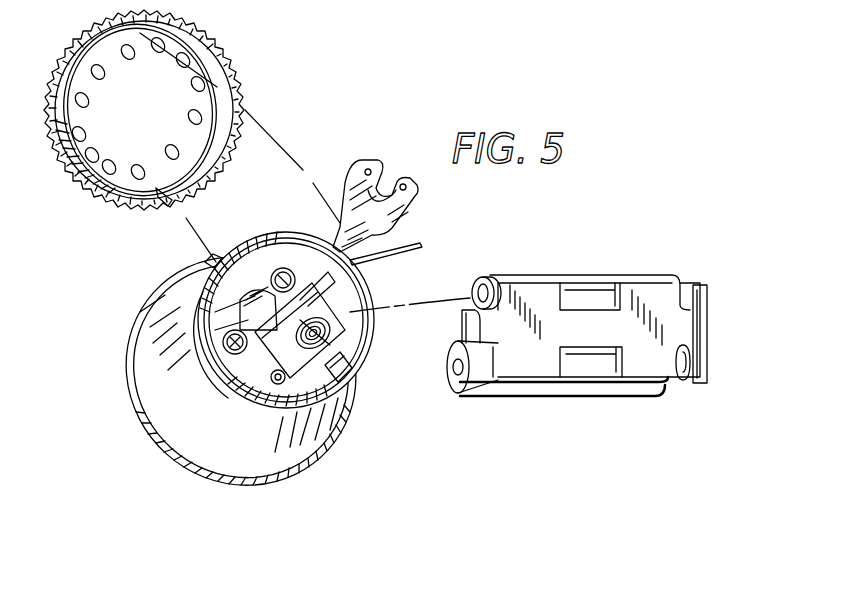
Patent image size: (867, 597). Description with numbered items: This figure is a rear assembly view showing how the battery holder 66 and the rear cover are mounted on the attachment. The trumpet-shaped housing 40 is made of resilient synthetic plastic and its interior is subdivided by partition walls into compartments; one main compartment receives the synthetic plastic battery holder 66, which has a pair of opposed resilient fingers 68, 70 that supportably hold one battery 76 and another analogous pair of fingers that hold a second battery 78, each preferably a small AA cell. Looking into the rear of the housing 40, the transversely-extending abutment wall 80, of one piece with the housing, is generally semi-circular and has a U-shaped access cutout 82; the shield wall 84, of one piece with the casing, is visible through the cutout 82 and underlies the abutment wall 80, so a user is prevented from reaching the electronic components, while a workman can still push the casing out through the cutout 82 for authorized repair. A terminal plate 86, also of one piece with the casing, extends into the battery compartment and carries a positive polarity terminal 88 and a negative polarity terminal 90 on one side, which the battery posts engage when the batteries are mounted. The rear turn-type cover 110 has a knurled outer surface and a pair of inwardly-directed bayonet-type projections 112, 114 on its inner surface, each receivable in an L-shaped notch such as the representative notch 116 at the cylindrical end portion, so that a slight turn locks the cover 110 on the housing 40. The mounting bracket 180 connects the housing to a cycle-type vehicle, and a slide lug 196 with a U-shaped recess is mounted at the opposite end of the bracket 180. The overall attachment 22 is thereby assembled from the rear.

The lighter assembly 22 is at (174, 131).
The housing 40 is at (190, 450).
The battery holder 66 is at (537, 297).
The resilient finger 68 is at (530, 398).
The resilient finger 70 is at (518, 278).
The battery 76 is at (586, 390).
The battery 78 is at (586, 285).
The abutment wall 80 is at (252, 282).
The access cutout 82 is at (199, 322).
The shield wall 84 is at (198, 292).
The terminal plate 86 is at (340, 400).
The positive polarity terminal 88 is at (277, 409).
The negative polarity terminal 90 is at (327, 326).
The rear turn-type cover 110 is at (52, 133).
The bayonet-type projection 112 is at (141, 15).
The bayonet-type projection 114 is at (160, 196).
The notch 116 is at (224, 247).
The mounting bracket 180 is at (369, 280).
The slide lug 196 is at (408, 209).